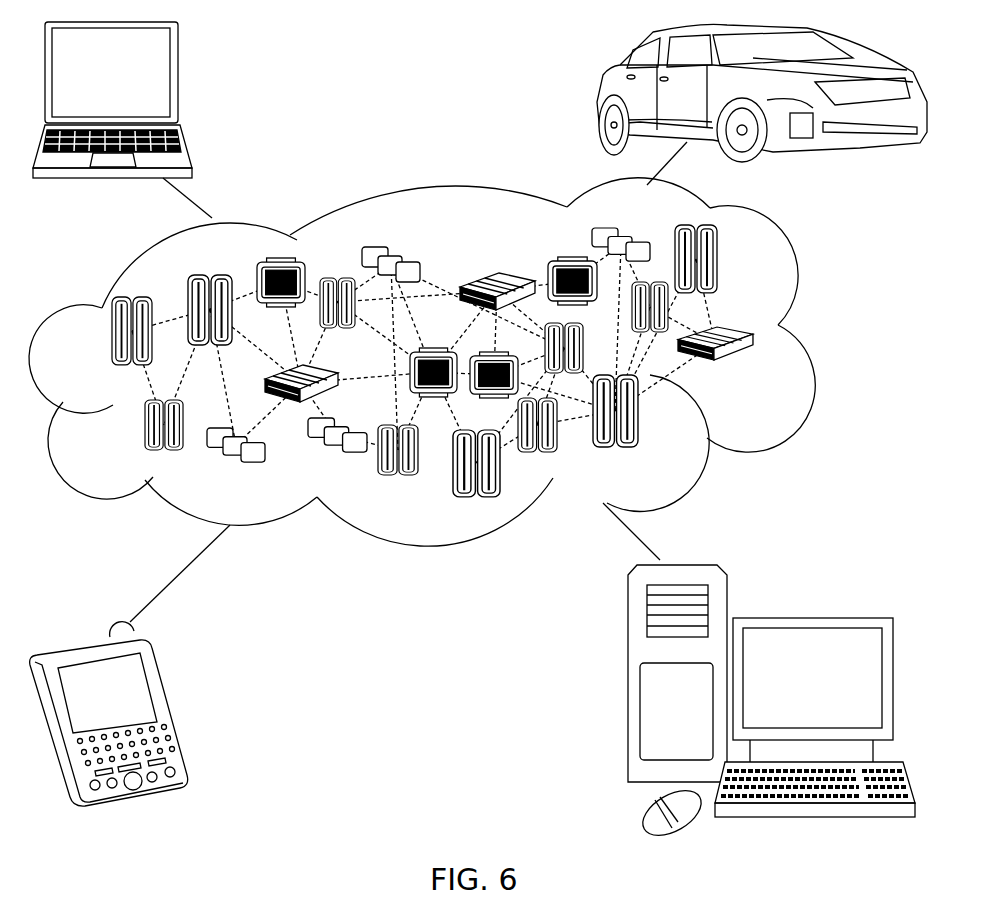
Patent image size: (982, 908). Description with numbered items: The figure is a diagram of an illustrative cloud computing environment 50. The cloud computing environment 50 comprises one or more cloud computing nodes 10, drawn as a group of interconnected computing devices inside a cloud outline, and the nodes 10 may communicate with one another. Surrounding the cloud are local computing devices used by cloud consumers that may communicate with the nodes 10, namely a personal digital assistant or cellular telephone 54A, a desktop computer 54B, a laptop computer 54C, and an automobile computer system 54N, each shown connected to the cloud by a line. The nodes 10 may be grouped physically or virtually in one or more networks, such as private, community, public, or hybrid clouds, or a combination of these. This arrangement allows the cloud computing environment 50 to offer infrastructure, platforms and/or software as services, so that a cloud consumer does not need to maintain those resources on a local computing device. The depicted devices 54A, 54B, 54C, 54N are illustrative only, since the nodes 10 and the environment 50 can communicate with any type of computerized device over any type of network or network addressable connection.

The cloud computing node 10 is at (760, 372).
The cloud computing environment 50 is at (806, 344).
The personal digital assistant (PDA) or cellular telephone 54A is at (167, 708).
The desktop computer 54B is at (810, 616).
The laptop computer 54C is at (182, 80).
The automobile computer system 54N is at (600, 95).